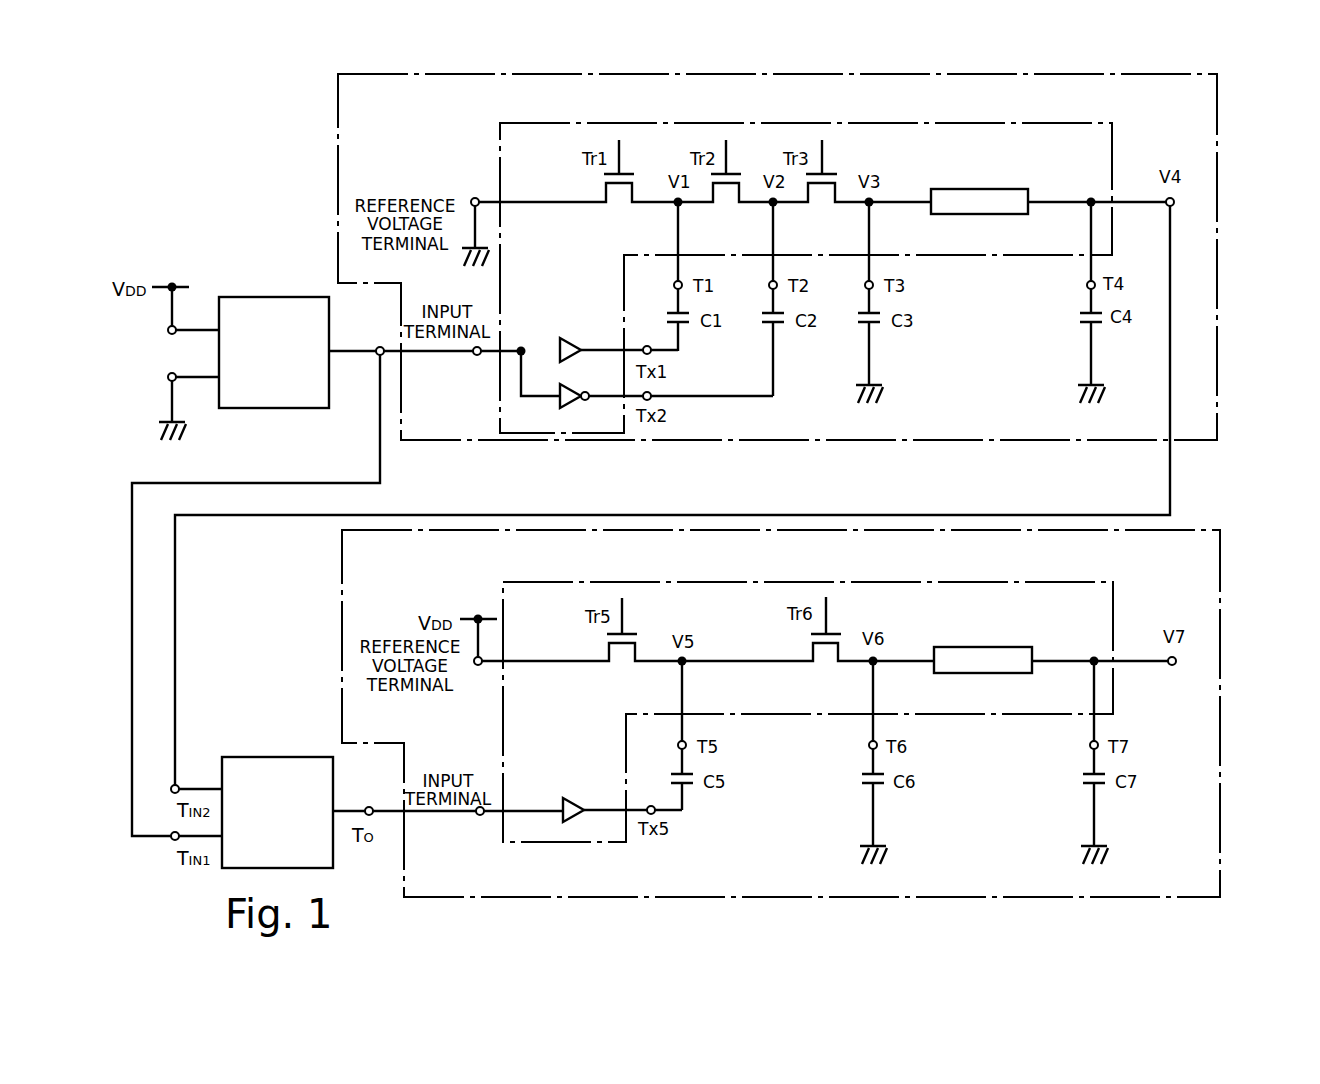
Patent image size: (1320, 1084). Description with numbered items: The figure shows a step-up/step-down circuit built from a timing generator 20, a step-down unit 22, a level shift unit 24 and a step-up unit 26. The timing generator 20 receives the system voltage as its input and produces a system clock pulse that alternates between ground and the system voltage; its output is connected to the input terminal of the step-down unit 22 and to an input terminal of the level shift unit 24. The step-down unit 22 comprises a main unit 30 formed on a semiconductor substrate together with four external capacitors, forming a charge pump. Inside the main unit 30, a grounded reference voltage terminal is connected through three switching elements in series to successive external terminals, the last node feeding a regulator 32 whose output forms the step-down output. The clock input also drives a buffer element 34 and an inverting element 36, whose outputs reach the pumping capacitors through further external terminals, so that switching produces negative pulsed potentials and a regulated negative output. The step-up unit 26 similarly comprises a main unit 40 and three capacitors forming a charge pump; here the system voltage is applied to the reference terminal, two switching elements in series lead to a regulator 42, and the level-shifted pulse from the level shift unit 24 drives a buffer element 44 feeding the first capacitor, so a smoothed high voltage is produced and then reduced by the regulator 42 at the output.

The timing generator 20 is at (274, 297).
The step-down unit 22 is at (1217, 300).
The level shift unit 24 is at (277, 760).
The step-up unit 26 is at (1220, 792).
The main unit 30 is at (890, 123).
The regulator 32 is at (990, 189).
The buffer element 34 is at (566, 338).
The inverting element 36 is at (566, 390).
The main unit 40 is at (893, 582).
The regulator 42 is at (994, 647).
The buffer element 44 is at (569, 800).